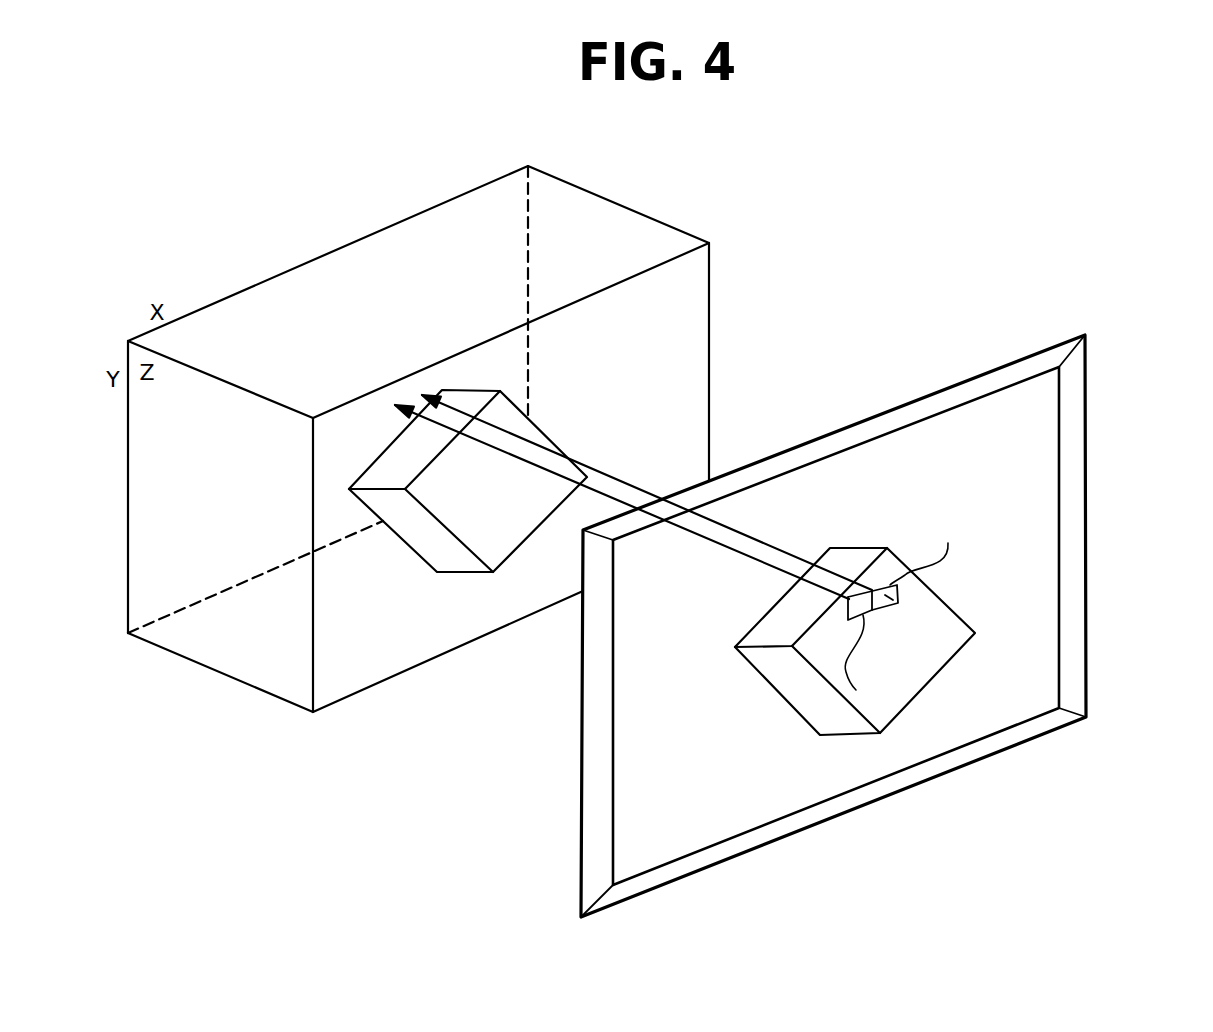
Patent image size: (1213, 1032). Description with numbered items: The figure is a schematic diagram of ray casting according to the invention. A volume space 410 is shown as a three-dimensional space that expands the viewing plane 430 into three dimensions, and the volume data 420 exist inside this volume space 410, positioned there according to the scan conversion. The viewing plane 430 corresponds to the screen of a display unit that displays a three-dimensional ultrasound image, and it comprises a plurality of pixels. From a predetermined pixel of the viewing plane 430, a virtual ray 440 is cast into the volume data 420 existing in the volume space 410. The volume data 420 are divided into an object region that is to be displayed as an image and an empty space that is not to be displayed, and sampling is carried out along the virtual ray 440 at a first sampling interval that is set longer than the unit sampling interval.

The volume space 410 is at (290, 297).
The volume data 420 is at (450, 559).
The viewing plane 430 is at (1087, 650).
The virtual ray 440 is at (790, 552).